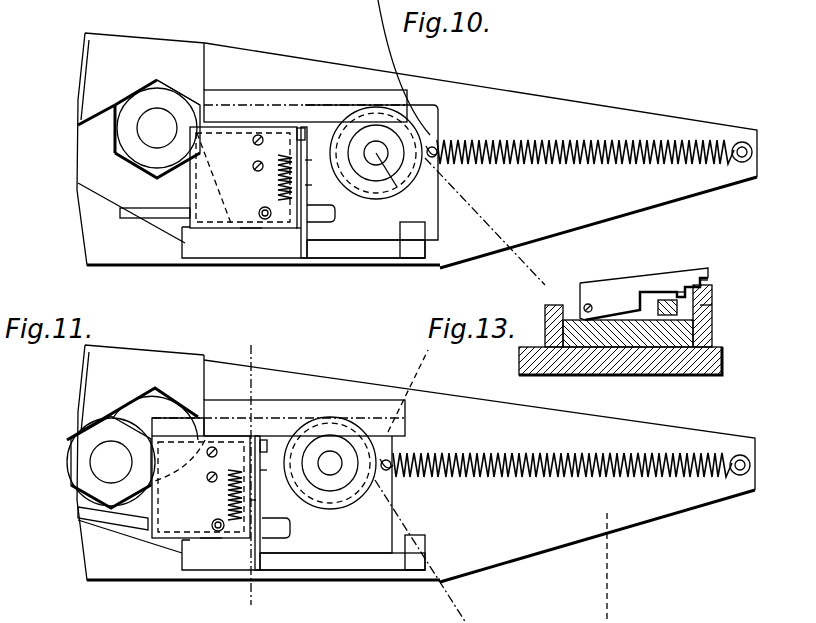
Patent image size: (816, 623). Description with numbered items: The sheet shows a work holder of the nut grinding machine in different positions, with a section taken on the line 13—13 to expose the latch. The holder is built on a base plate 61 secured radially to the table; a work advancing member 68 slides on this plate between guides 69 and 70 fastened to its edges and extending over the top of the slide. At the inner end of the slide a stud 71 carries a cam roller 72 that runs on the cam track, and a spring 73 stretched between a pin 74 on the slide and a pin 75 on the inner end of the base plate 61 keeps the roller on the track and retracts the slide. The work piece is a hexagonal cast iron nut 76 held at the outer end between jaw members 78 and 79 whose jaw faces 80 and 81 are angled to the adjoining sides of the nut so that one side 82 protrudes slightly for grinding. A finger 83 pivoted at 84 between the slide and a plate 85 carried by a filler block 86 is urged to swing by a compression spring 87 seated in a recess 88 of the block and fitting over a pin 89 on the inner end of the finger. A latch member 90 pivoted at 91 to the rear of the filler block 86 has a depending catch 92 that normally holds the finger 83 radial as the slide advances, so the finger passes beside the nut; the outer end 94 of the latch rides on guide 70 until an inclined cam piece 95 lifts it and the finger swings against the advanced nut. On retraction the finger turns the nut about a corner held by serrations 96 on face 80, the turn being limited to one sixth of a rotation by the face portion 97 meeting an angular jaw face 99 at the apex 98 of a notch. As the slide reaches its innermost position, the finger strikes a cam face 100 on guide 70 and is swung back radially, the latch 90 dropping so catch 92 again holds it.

In FIG. 11, the section line 13— 13 is at (244, 608).
In FIG. 10, the base plate 61 is at (477, 107).
In FIG. 11, the base plate 61 is at (352, 393).
In FIG. 13, the base plate 61 is at (694, 357).
In FIG. 10, the work advancing member 68 is at (418, 112).
In FIG. 11, the work advancing member 68 is at (360, 540).
In FIG. 13, the work advancing member 68 is at (640, 335).
In FIG. 10, the guide 69 is at (335, 97).
In FIG. 11, the guide 69 is at (295, 410).
In FIG. 13, the guide 69 is at (545, 320).
In FIG. 10, the guide 70 is at (358, 248).
In FIG. 11, the guide 70 is at (327, 560).
In FIG. 13, the guide 70 is at (712, 335).
In FIG. 10, the stud 71 is at (402, 182).
In FIG. 10, the cam roller 72 is at (372, 187).
In FIG. 11, the cam roller 72 is at (330, 463).
In FIG. 10, the spring 73 is at (537, 140).
In FIG. 11, the spring 73 is at (540, 456).
In FIG. 10, the pin 74 is at (437, 148).
In FIG. 11, the pin 74 is at (386, 464).
In FIG. 10, the pin 75 is at (742, 142).
In FIG. 11, the pin 75 is at (742, 476).
In FIG. 10, the hexagonal cast iron nut 76 is at (113, 133).
In FIG. 10, the jaw member 78 is at (95, 70).
In FIG. 11, the jaw member 78 is at (90, 405).
In FIG. 10, the jaw member 79 is at (100, 246).
In FIG. 11, the jaw member 79 is at (97, 547).
In FIG. 10, the jaw face 80 is at (80, 126).
In FIG. 10, the jaw face 81 is at (78, 183).
In FIG. 11, the protruding side of the nut 82 is at (70, 456).
In FIG. 10, the finger 83 is at (335, 213).
In FIG. 11, the finger 83 is at (292, 528).
In FIG. 13, the finger 83 is at (663, 298).
In FIG. 10, the pivot 84 is at (265, 222).
In FIG. 11, the pivot 84 is at (217, 531).
In FIG. 10, the plate 85 is at (194, 168).
In FIG. 11, the plate 85 is at (170, 532).
In FIG. 10, the filler block 86 is at (252, 164).
In FIG. 11, the filler block 86 is at (201, 478).
In FIG. 10, the compression spring 87 is at (297, 240).
In FIG. 11, the compression spring 87 is at (258, 500).
In FIG. 10, the recess 88 is at (275, 170).
In FIG. 11, the recess 88 is at (235, 495).
In FIG. 10, the pin 89 is at (350, 185).
In FIG. 10, the latch member 90 is at (350, 162).
In FIG. 11, the latch member 90 is at (262, 472).
In FIG. 13, the latch member 90 is at (607, 290).
In FIG. 10, the pivot 91 is at (308, 136).
In FIG. 11, the pivot 91 is at (267, 448).
In FIG. 13, the pivot 91 is at (584, 305).
In FIG. 13, the depending catch 92 is at (680, 292).
In FIG. 10, the outer end of the latch 94 is at (306, 258).
In FIG. 11, the outer end of the latch 94 is at (259, 565).
In FIG. 13, the outer end of the latch 94 is at (705, 280).
In FIG. 10, the inclined cam piece 95 is at (250, 245).
In FIG. 11, the inclined cam piece 95 is at (258, 572).
In FIG. 13, the inclined cam piece 95 is at (712, 305).
In FIG. 10, the serrations 96 is at (115, 103).
In FIG. 10, the jaw face portion 97 is at (147, 79).
In FIG. 10, the apex 98 is at (157, 78).
In FIG. 10, the angularly extending jaw face 99 is at (165, 86).
In FIG. 10, the cam face 100 is at (407, 226).
In FIG. 11, the cam face 100 is at (395, 552).